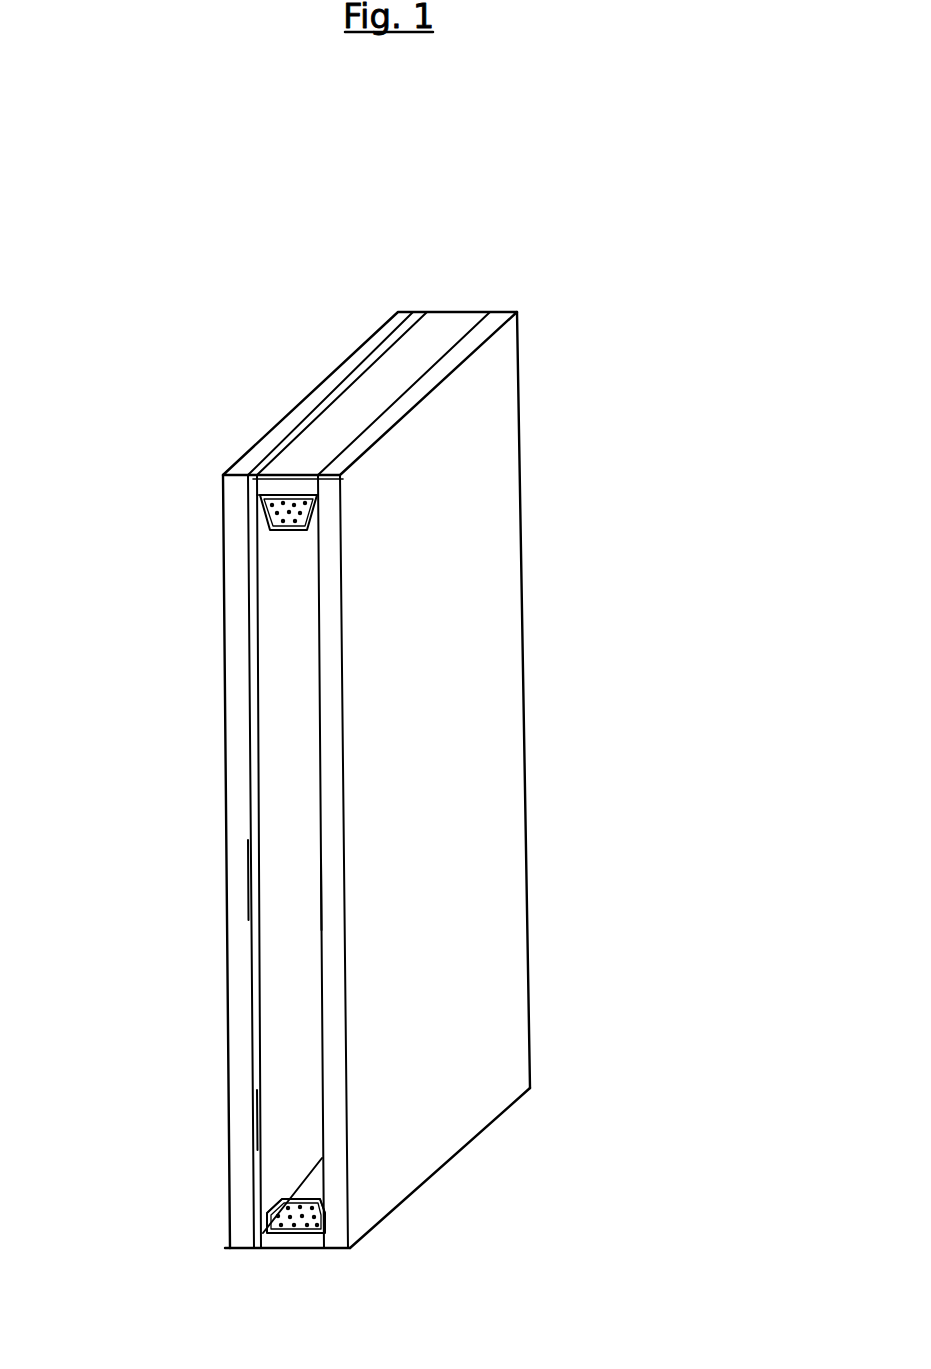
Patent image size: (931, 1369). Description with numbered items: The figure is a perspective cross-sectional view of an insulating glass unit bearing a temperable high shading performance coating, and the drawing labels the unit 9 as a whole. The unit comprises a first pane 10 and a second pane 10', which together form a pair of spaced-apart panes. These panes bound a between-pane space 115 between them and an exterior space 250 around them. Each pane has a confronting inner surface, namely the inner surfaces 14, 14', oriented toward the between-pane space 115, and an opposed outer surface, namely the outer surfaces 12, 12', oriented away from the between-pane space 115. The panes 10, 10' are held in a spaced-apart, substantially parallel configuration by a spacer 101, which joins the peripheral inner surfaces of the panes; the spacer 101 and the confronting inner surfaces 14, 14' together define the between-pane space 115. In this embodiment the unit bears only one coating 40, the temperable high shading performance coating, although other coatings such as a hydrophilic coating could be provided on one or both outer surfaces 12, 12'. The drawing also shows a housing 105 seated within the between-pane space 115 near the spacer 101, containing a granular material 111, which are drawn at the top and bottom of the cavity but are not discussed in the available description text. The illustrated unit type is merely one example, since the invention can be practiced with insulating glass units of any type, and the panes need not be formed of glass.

The vacuum insulating glass unit 9 is at (148, 222).
The exterior space 250 is at (682, 1010).
The first pane 10 is at (168, 861).
The second pane 10' is at (483, 861).
The outer surface 12 is at (243, 860).
The outer surface 12' is at (468, 861).
The inner surface 14 is at (191, 889).
The inner surface 14' is at (466, 895).
The coating 40 is at (253, 1100).
The between-pane space 115 is at (280, 985).
The spacer 101 is at (295, 535).
The getter housing 105 is at (303, 487).
The getter material 111 is at (300, 513).